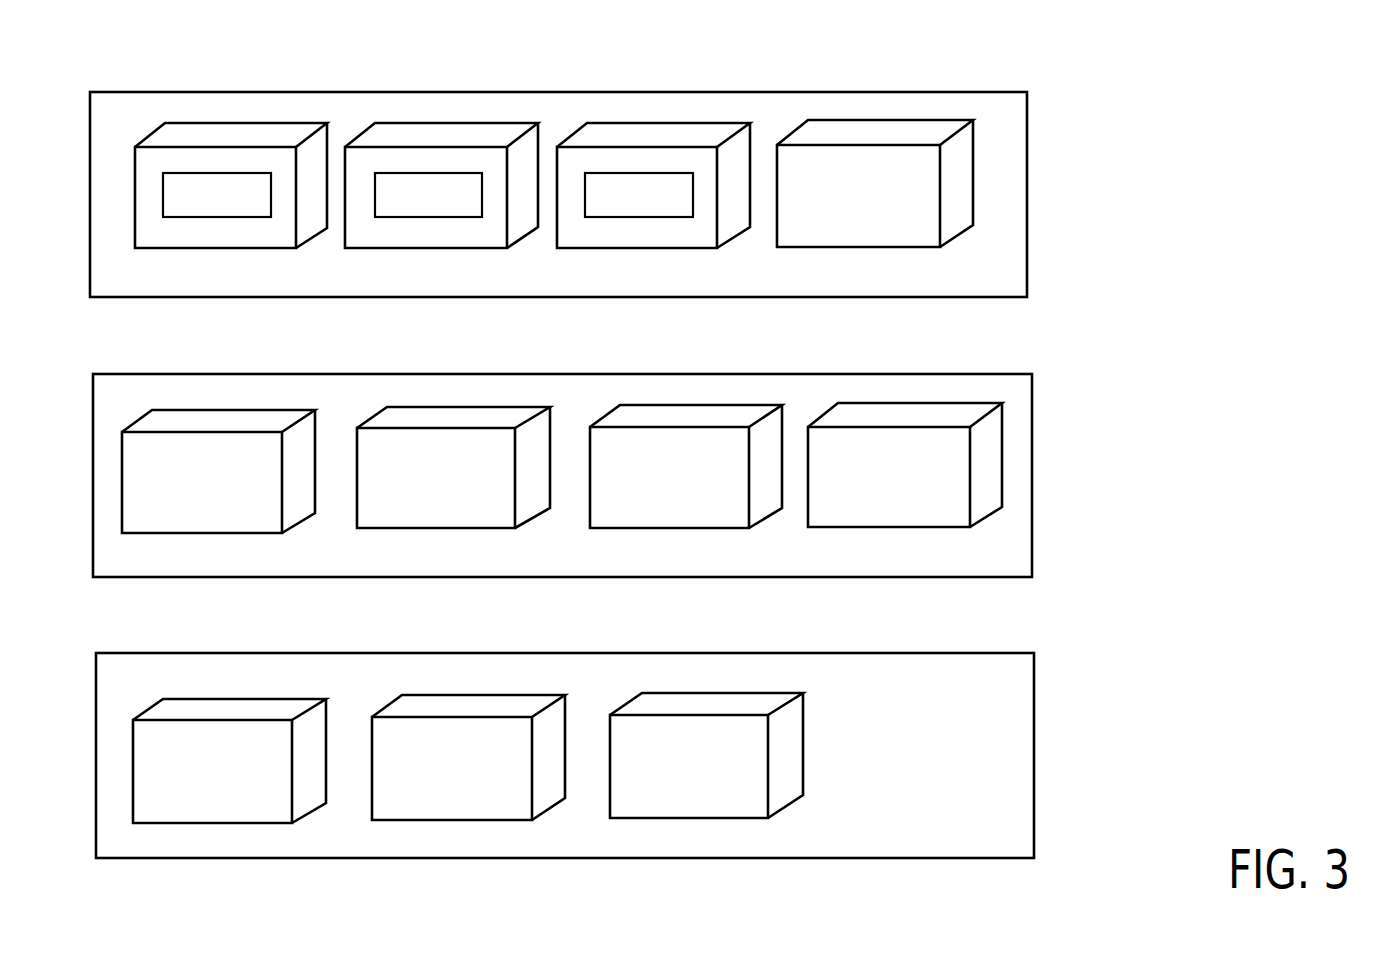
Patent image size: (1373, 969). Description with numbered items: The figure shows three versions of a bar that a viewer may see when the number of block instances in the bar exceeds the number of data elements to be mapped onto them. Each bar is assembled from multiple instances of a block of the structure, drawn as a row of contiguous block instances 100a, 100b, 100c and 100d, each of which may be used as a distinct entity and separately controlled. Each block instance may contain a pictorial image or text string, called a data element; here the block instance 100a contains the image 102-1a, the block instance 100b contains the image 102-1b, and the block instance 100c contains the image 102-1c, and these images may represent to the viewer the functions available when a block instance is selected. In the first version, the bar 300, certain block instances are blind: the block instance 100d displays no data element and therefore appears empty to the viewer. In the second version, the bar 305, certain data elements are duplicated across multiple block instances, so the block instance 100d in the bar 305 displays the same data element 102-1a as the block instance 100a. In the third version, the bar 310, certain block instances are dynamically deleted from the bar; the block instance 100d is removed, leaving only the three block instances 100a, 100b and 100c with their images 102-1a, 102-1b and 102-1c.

The block instance 100a is at (233, 143).
The block instance 100b is at (446, 143).
The block instance 100c is at (656, 143).
The block instance 100d is at (880, 117).
The image 102-1a is at (217, 195).
The image 102-1b is at (428, 195).
The image 102-1c is at (639, 195).
The bar 300 is at (1028, 227).
The bar 305 is at (1027, 440).
The bar 310 is at (1034, 698).